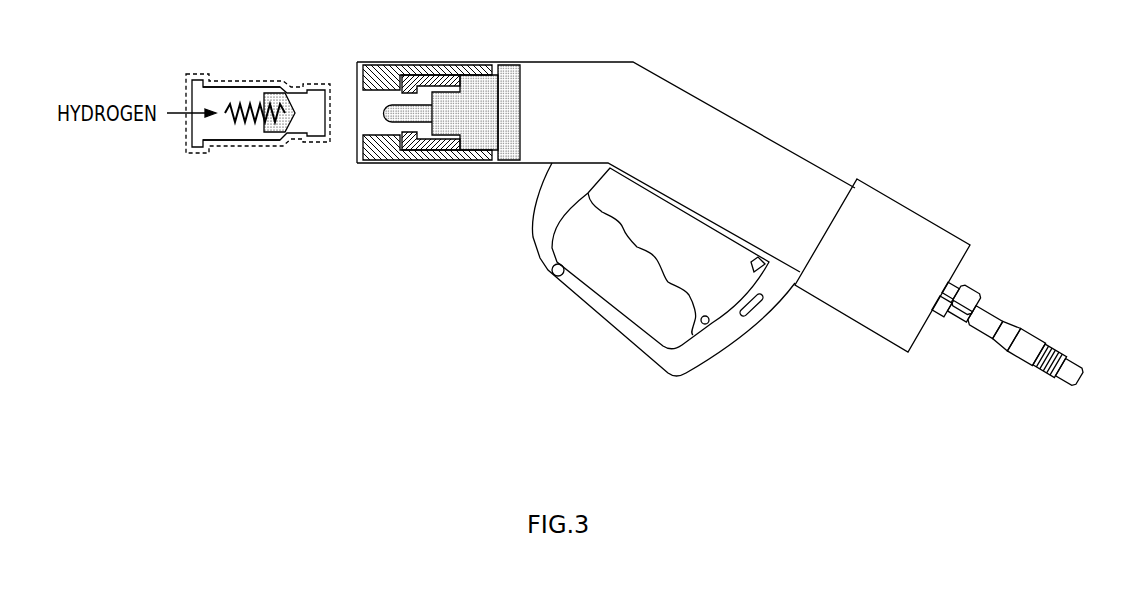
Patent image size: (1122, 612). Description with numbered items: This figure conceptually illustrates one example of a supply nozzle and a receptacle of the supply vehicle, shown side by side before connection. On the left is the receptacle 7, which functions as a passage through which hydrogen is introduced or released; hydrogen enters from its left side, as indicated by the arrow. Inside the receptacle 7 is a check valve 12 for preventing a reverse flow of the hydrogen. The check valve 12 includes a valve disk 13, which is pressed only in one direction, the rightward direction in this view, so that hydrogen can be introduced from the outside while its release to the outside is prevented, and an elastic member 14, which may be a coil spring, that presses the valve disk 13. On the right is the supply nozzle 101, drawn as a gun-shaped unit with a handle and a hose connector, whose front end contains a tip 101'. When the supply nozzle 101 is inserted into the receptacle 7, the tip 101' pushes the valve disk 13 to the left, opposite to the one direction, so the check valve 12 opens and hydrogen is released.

The receptacle 7 is at (196, 156).
The check valve 12 is at (254, 138).
The valve disk 13 is at (282, 132).
The elastic member 14 is at (244, 104).
The supply nozzle 101 is at (720, 223).
The tip 101' is at (404, 163).